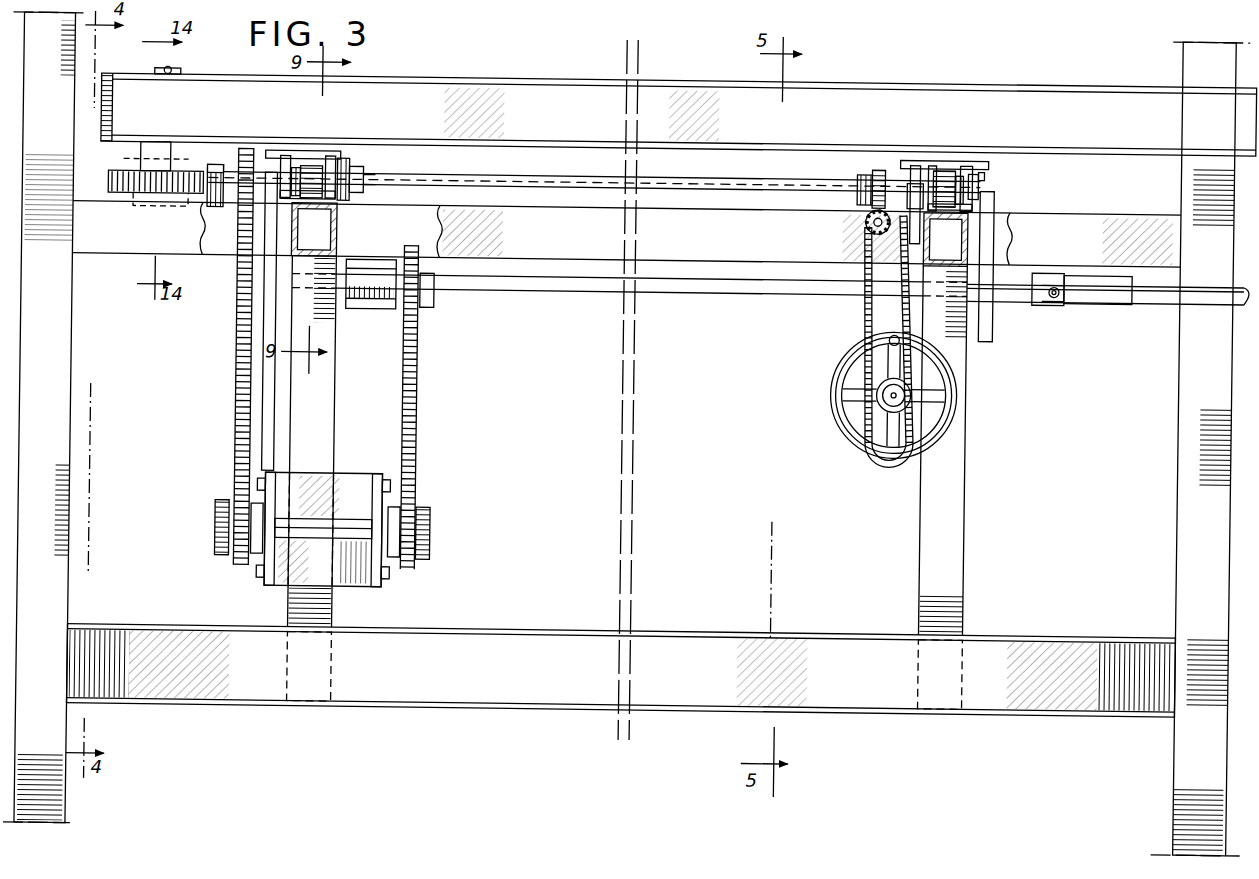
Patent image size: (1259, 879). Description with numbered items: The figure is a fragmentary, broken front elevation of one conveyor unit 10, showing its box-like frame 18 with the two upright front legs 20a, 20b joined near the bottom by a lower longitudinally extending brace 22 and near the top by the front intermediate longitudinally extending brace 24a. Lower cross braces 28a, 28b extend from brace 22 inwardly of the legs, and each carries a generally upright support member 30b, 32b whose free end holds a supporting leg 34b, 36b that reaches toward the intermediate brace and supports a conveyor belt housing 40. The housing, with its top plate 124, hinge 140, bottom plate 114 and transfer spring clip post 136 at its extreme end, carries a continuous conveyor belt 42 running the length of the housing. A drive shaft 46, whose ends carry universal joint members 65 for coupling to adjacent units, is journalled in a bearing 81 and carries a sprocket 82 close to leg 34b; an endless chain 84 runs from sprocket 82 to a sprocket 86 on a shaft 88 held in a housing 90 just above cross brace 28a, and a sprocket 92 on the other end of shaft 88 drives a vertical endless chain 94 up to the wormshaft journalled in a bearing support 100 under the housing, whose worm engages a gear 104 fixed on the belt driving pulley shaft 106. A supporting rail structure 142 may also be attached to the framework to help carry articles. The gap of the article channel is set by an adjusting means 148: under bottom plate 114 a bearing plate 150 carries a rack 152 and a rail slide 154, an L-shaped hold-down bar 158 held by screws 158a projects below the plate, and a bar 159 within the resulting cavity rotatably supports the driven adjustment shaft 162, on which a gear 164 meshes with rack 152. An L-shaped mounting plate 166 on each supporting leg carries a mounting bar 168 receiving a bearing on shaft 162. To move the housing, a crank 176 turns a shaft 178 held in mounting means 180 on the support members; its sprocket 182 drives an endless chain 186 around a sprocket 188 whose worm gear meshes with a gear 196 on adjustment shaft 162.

The conveyor unit 10 is at (627, 434).
The box-like frame 18 is at (1060, 633).
The front leg 20a is at (70, 712).
The front leg 20b is at (1178, 755).
The lower longitudinally extending brace 22 is at (530, 684).
The front intermediate longitudinally extending brace 24a is at (575, 242).
The lower cross brace 28a is at (334, 662).
The lower cross brace 28b is at (965, 680).
The rear support member 30b is at (334, 412).
The rear support member 32b is at (965, 510).
The rear supporting leg 34b is at (334, 240).
The rear supporting leg 36b is at (965, 244).
The conveyor belt housing 40 is at (908, 88).
The conveyor belt 42 is at (765, 132).
The drive shaft 46 is at (740, 290).
The universal joint members 65 is at (1090, 302).
The bearing or journalling means 81 is at (372, 312).
The sprocket 82 is at (432, 294).
The endless chain 84 is at (416, 405).
The sprocket 86 is at (416, 492).
The shaft 88 is at (312, 542).
The housing 90 is at (345, 590).
The sprocket 92 is at (227, 560).
The endless chain 94 is at (235, 420).
The bearing support 100 is at (212, 212).
The gear 104 is at (120, 199).
The belt driving pulley shaft 106 is at (137, 160).
The bottom plate 114 is at (700, 165).
The top plate 124 is at (679, 98).
The transfer spring clip post 136 is at (112, 72).
The hinge 140 is at (176, 74).
The supporting rail structure 142 is at (268, 318).
The means for adjusting the gap 148 is at (828, 308).
The bearing plate 150 is at (372, 183).
The rack 152 is at (335, 160).
The rail slide 154 is at (292, 176).
The L-shaped hold-down bar 158 is at (969, 185).
The screws 158a is at (282, 170).
The bar 159 is at (326, 165).
The driven adjustment shaft 162 is at (552, 182).
The gear 164 is at (308, 172).
The L-shaped mounting plate 166 is at (1018, 222).
The mounting bar 168 is at (342, 204).
The handle or crank 176 is at (869, 417).
The shaft 178 is at (845, 425).
The mounting means 180 is at (905, 445).
The sprocket 182 is at (876, 388).
The endless chain 186 is at (838, 344).
The sprocket 188 is at (862, 228).
The gear 196 is at (840, 176).